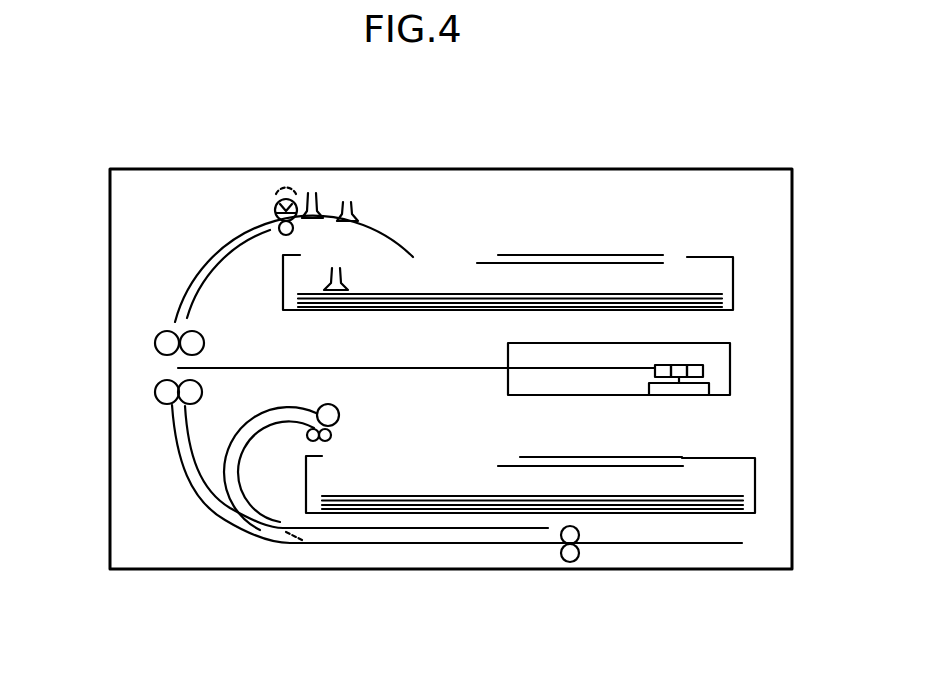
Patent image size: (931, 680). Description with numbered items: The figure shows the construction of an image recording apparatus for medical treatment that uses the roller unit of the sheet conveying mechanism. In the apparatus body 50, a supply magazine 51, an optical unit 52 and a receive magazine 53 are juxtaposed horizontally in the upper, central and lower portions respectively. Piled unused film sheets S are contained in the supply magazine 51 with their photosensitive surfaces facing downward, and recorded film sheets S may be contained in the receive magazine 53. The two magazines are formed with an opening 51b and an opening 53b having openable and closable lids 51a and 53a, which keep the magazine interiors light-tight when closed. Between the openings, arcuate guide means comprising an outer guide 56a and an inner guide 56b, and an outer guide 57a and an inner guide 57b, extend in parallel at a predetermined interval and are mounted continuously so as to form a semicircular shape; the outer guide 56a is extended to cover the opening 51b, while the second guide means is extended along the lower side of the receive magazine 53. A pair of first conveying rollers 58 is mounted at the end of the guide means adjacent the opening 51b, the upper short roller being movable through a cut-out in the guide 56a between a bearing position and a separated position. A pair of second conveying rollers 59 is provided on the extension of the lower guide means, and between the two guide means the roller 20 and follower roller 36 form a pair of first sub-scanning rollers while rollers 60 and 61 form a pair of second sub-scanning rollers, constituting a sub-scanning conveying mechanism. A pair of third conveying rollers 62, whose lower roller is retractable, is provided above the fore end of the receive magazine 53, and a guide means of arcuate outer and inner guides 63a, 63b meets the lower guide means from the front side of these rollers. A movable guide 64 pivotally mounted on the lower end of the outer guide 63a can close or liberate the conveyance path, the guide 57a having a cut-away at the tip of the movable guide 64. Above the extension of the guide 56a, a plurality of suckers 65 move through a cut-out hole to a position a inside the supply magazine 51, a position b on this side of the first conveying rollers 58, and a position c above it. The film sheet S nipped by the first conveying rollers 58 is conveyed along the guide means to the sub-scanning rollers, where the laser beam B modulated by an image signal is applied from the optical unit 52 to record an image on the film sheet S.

The apparatus body 50 is at (585, 169).
The supply magazine 51 is at (690, 257).
The lid 51a is at (633, 257).
The opening 51b is at (444, 272).
The optical unit 52 is at (731, 367).
The receive magazine 53 is at (756, 497).
The lid 53a is at (683, 463).
The opening 53b is at (420, 463).
The outer guide 56a is at (242, 225).
The inner guide 56b is at (218, 256).
The outer guide 57a is at (283, 528).
The inner guide 57b is at (232, 519).
The pair of first conveying rollers 58 is at (284, 196).
The pair of second conveying rollers 59 is at (566, 562).
The roller 60 is at (172, 408).
The roller 61 is at (155, 392).
The pair of third conveying rollers 62 is at (340, 432).
The outer guide 63a is at (223, 473).
The inner guide 63b is at (235, 482).
The movable guide 64 is at (290, 528).
The suckers 65 is at (353, 203).
The follower roller 36 is at (176, 331).
The roller 20 is at (155, 343).
The film sheet S is at (722, 296).
The position a is at (338, 290).
The position b is at (320, 213).
The position c is at (304, 208).
The laser beam B is at (245, 368).